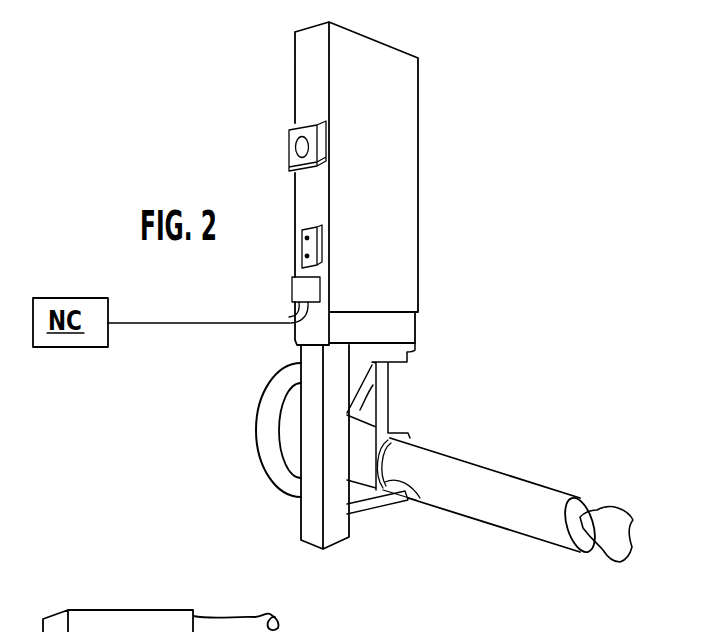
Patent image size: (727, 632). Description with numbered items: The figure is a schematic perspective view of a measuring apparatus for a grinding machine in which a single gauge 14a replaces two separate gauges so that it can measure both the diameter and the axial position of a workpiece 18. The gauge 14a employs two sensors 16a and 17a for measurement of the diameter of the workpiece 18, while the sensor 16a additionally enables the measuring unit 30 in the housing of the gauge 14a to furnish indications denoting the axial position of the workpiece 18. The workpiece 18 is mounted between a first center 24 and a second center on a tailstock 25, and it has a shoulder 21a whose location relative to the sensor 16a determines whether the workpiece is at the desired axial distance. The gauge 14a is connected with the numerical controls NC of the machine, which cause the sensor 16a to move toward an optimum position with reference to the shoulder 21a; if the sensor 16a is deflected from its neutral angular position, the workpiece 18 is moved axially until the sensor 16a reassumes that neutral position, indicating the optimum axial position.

The gauge 14a is at (403, 223).
The sensor 16a is at (383, 410).
The sensor 17a is at (368, 507).
The workpiece 18 is at (508, 488).
The shoulder 21a is at (417, 493).
The first center 24 is at (620, 563).
The tailstock 25 is at (266, 414).
The measuring unit 30 is at (110, 615).